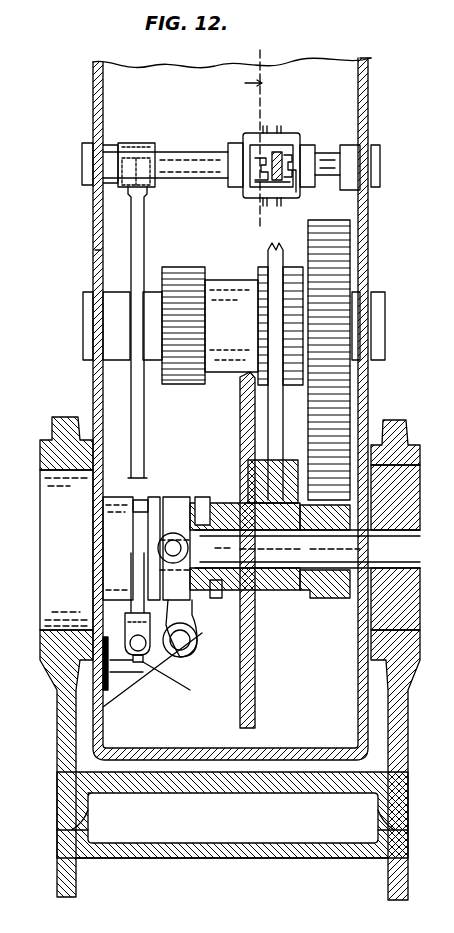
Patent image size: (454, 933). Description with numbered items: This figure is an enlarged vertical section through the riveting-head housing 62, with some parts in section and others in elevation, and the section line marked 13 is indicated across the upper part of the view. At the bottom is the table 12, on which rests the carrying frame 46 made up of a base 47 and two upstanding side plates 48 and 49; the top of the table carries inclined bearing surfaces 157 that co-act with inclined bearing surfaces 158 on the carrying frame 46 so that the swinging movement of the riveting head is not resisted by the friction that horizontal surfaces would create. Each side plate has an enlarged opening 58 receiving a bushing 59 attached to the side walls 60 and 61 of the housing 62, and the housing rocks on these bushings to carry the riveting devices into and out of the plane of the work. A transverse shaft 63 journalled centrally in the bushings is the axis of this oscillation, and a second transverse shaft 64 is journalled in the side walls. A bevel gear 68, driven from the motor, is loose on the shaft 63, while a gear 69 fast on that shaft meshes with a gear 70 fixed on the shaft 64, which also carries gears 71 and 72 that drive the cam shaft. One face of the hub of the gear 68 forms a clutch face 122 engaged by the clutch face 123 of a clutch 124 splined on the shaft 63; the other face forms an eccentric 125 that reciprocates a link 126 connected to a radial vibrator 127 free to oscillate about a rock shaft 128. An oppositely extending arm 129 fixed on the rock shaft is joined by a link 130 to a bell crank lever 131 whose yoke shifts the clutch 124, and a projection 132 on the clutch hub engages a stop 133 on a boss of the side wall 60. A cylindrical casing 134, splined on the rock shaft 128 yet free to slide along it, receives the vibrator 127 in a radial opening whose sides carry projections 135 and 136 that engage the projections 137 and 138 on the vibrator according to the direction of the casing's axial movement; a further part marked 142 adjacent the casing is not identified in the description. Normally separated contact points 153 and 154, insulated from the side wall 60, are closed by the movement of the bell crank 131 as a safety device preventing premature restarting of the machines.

The table 12 is at (242, 856).
The section line 13 is at (251, 135).
The carrying frame 46 is at (46, 444).
The base 47 is at (236, 790).
The side plate 48 is at (408, 700).
The side plate 49 is at (60, 735).
The enlarged opening 58 is at (66, 550).
The bushing 59 is at (396, 505).
The side wall 60 is at (93, 380).
The side wall 61 is at (371, 234).
The housing 62 is at (73, 264).
The transverse shaft 63 is at (307, 549).
The transverse shaft 64 is at (385, 320).
The bevel gear 68 is at (262, 712).
The gear 69 is at (328, 598).
The gear 70 is at (340, 414).
The gear 71 is at (262, 270).
The gear 72 is at (178, 269).
The clutch face 122 is at (216, 598).
The clutch face 123 is at (202, 500).
The clutch 124 is at (178, 480).
The eccentric 125 is at (247, 494).
The link 126 is at (268, 418).
The vibrator 127 is at (278, 150).
The rock shaft 128 is at (186, 147).
The arm 129 is at (134, 148).
The link 130 is at (144, 224).
The bell crank lever 131 is at (186, 618).
The projection 132 is at (158, 490).
The stop 133 is at (128, 515).
The cylindrical casing 134 is at (286, 148).
The projection 135 is at (252, 190).
The projection 136 is at (290, 168).
The projection 137 is at (258, 168).
The projection 138 is at (292, 192).
The terminals 142 is at (279, 125).
The contact point 153 is at (150, 665).
The contact point 154 is at (155, 672).
The bearing surface 157 is at (62, 848).
The bearing surface 158 is at (88, 814).